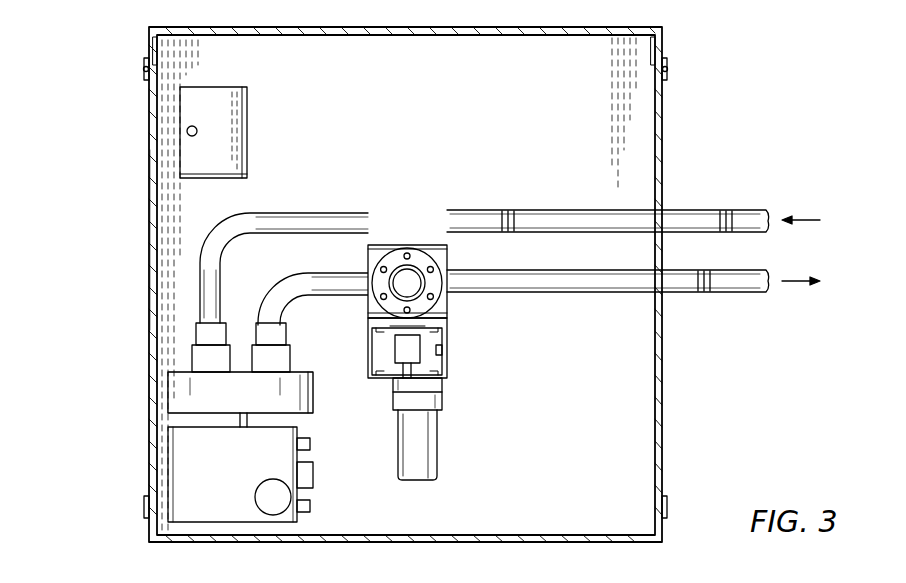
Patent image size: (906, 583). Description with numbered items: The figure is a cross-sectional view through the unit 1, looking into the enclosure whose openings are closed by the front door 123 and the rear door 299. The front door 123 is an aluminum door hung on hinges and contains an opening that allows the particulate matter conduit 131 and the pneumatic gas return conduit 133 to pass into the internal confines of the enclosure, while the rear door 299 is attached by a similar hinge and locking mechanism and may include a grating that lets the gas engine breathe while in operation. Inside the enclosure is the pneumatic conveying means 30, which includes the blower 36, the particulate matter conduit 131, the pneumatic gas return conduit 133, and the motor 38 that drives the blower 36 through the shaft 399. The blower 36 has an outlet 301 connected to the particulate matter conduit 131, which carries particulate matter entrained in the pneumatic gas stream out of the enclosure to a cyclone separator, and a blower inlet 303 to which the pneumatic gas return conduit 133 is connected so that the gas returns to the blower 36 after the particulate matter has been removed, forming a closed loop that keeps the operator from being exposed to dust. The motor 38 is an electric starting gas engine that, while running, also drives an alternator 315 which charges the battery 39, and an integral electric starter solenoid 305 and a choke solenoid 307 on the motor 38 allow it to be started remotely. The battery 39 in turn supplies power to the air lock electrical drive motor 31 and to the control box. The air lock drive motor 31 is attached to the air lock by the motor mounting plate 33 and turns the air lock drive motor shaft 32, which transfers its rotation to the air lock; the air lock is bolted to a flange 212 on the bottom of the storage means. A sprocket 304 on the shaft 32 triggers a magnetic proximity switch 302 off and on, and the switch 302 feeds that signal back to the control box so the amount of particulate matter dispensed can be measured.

The unit 1 is at (84, 94).
The front door 123 is at (665, 108).
The battery 39 is at (190, 157).
The rear door 299 is at (150, 236).
The blower inlet 303 is at (200, 334).
The blower outlet 301 is at (284, 335).
The pneumatic conveying means 30 is at (165, 385).
The blower 36 is at (178, 397).
The shaft 399 is at (237, 421).
The motor 38 is at (182, 474).
The electric starter solenoid 305 is at (310, 443).
The alternator 315 is at (313, 476).
The choke solenoid 307 is at (310, 506).
The flange 212 is at (421, 262).
The pneumatic gas return conduit 133 is at (738, 210).
The particulate matter conduit 131 is at (740, 293).
The motor mounting plate 33 is at (437, 363).
The sprocket 304 is at (405, 337).
The magnetic proximity switch 302 is at (441, 350).
The air lock drive motor shaft 32 is at (412, 372).
The air lock electrical drive motor 31 is at (425, 455).